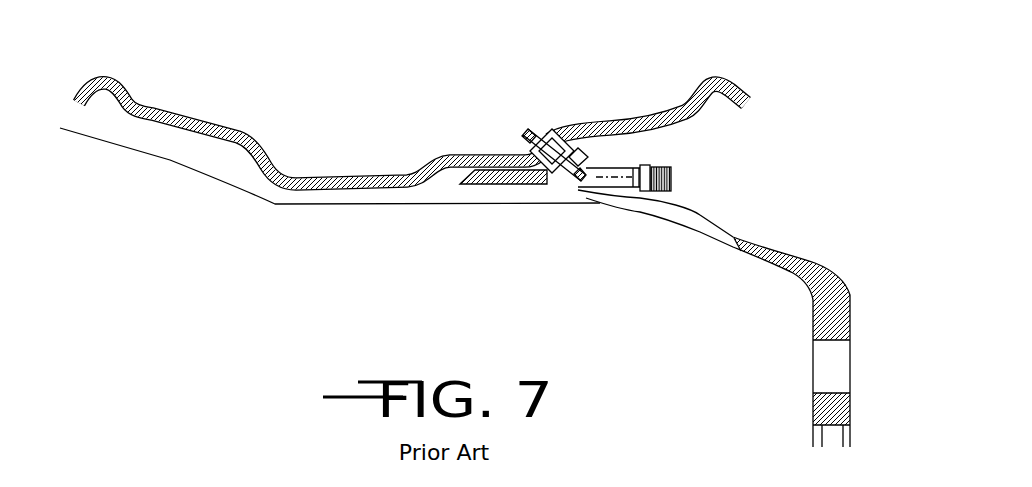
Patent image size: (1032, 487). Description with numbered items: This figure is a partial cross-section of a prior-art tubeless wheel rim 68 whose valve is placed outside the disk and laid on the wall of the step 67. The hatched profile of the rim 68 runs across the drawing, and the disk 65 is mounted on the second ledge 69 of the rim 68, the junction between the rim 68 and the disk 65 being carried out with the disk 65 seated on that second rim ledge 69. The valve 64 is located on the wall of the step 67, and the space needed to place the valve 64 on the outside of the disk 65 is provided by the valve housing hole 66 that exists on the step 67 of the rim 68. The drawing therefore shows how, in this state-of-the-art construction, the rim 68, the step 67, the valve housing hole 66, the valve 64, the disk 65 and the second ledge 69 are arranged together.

The valve 64 is at (595, 187).
The disk 65 is at (812, 314).
The valve housing hole 66 is at (548, 128).
The step 67 is at (526, 136).
The tubeless wheel rim 68 is at (320, 156).
The second ledge 69 is at (473, 157).